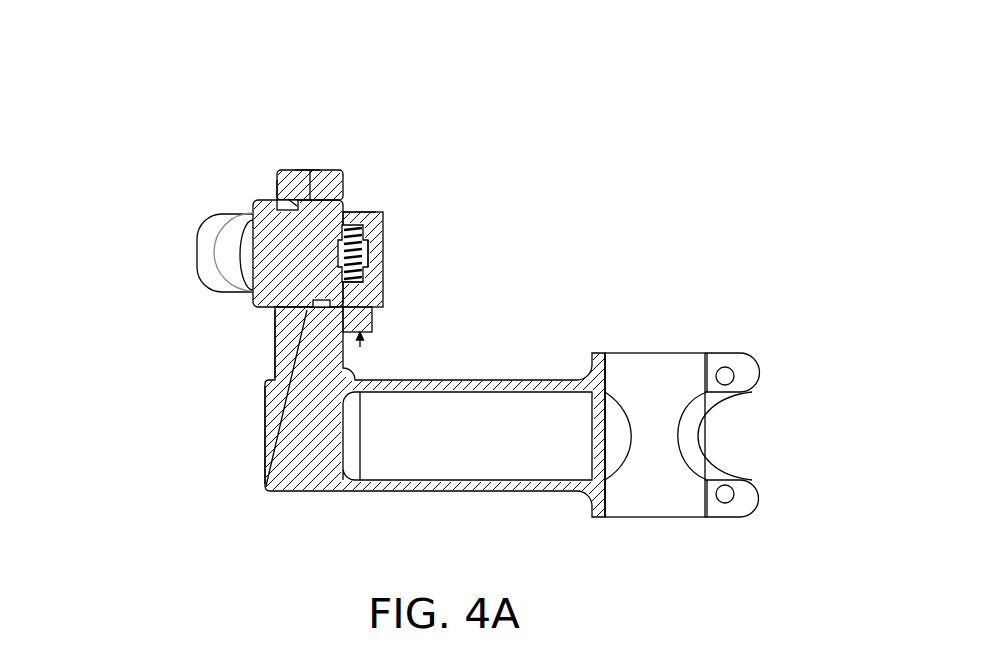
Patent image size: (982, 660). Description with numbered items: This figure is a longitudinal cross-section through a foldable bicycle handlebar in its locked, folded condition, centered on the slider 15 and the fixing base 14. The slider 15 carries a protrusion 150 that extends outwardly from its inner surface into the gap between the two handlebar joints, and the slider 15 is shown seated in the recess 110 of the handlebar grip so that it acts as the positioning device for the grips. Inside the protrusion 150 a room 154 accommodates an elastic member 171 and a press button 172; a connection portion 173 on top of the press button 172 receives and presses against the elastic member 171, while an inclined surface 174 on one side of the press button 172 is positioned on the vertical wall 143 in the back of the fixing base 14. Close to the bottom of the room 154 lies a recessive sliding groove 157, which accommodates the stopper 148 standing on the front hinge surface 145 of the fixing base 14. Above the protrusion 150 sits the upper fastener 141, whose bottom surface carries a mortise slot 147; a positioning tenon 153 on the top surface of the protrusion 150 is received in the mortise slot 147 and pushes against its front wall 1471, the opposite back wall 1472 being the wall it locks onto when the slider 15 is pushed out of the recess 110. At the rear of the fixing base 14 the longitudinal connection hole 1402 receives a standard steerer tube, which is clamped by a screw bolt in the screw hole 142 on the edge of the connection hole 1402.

The fixing base 14 is at (545, 380).
The slider 15 is at (270, 250).
The recess 110 is at (265, 308).
The upper fastener 141 is at (325, 170).
The screw hole 142 is at (728, 376).
The vertical wall 143 is at (328, 310).
The hinge surface 145 is at (266, 486).
The mortise slot 147 is at (277, 197).
The stopper 148 is at (275, 330).
The protrusion 150 is at (382, 212).
The positioning tenon 153 is at (308, 170).
The room 154 is at (360, 212).
The recessive sliding groove 157 is at (267, 392).
The elastic member 171 is at (363, 245).
The press button 172 is at (372, 325).
The connection portion 173 is at (368, 267).
The inclined surface 174 is at (370, 292).
The connection hole 1402 is at (642, 485).
The front wall 1471 is at (346, 212).
The back wall 1472 is at (277, 196).